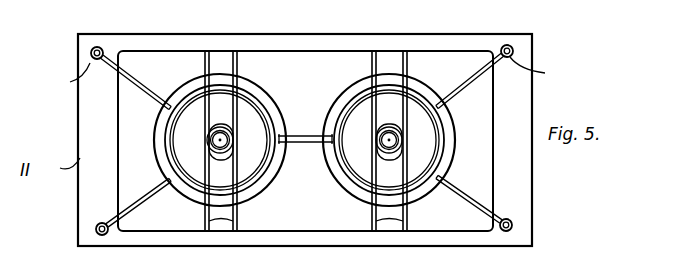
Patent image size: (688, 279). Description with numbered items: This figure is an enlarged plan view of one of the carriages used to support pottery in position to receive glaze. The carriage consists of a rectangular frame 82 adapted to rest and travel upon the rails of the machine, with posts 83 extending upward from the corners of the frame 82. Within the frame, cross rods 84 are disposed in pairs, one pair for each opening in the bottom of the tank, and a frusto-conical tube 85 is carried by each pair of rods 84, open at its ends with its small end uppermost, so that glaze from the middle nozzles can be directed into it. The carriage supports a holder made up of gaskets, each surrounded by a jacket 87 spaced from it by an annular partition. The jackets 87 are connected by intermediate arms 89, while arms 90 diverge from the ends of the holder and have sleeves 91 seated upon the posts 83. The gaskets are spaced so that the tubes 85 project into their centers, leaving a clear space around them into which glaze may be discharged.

The rectangular frame 82 is at (362, 244).
The posts 83 is at (98, 47).
The cross rods 84 is at (235, 219).
The frusto-conical tube 85 is at (381, 129).
The jacket 87 is at (160, 151).
The intermediate arms 89 is at (311, 146).
The arms 90 is at (137, 88).
The sleeves 91 is at (308, 80).